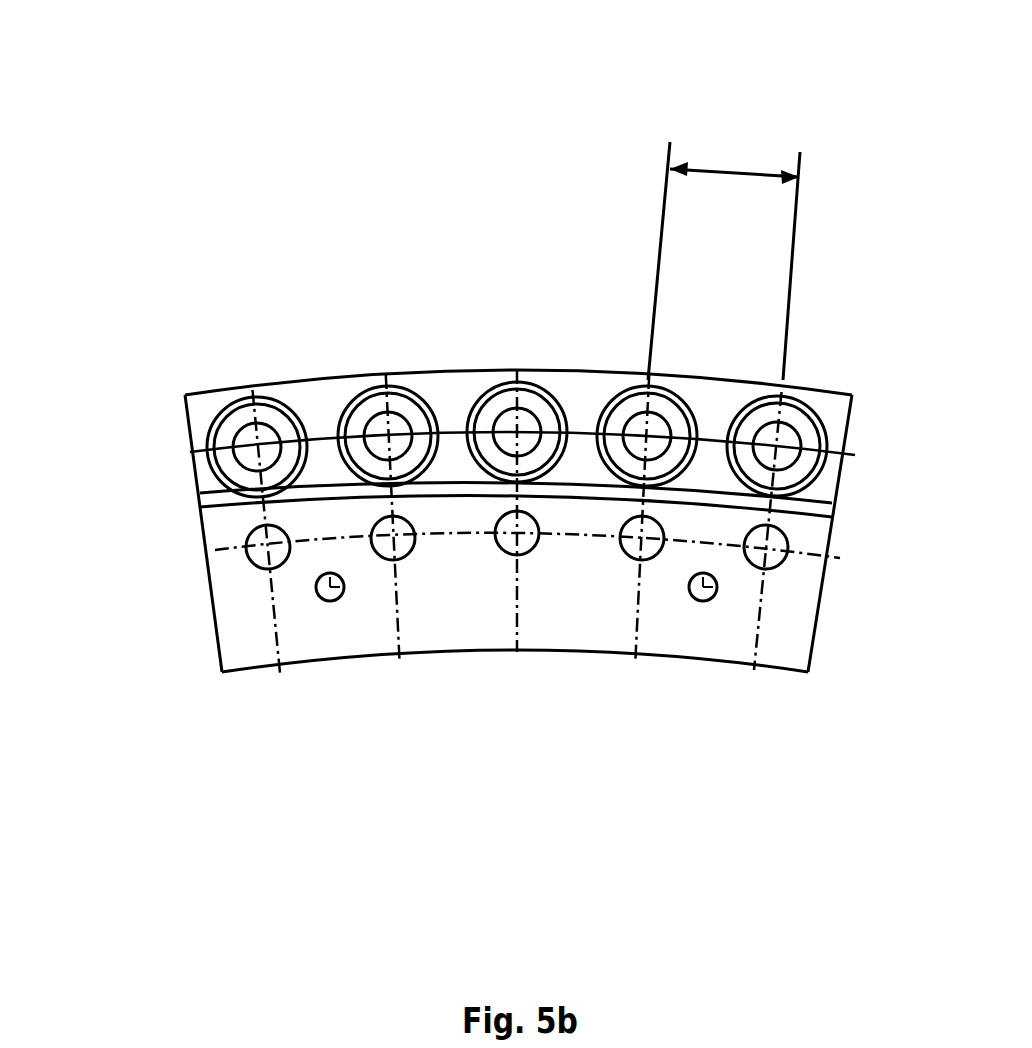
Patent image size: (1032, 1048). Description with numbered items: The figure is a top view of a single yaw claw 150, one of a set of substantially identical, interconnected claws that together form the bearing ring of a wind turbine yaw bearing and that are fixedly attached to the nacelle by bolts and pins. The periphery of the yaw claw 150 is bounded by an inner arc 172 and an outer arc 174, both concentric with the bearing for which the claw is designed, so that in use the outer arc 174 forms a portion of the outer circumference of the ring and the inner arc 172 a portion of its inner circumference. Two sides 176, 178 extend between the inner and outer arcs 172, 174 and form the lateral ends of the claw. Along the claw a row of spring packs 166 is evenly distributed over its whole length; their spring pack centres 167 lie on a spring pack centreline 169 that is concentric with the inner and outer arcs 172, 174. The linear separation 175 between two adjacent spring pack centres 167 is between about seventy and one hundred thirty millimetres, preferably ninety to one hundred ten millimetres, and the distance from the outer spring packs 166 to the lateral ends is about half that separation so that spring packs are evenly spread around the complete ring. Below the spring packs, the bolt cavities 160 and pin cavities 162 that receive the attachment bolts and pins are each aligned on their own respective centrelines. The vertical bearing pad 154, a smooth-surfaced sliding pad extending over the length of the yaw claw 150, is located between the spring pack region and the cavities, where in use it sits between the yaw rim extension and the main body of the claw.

The yaw claw 150 is at (473, 408).
The vertical bearing pad 154 is at (240, 510).
The bolt cavities 160 is at (628, 550).
The pin cavities 162 is at (325, 600).
The spring packs 166 is at (415, 413).
The spring pack centres 167 is at (517, 432).
The spring pack centreline 169 is at (458, 476).
The inner arc 172 is at (368, 663).
The outer arc 174 is at (402, 375).
The linear separation 175 is at (718, 168).
The side 176 is at (817, 625).
The side 178 is at (218, 648).